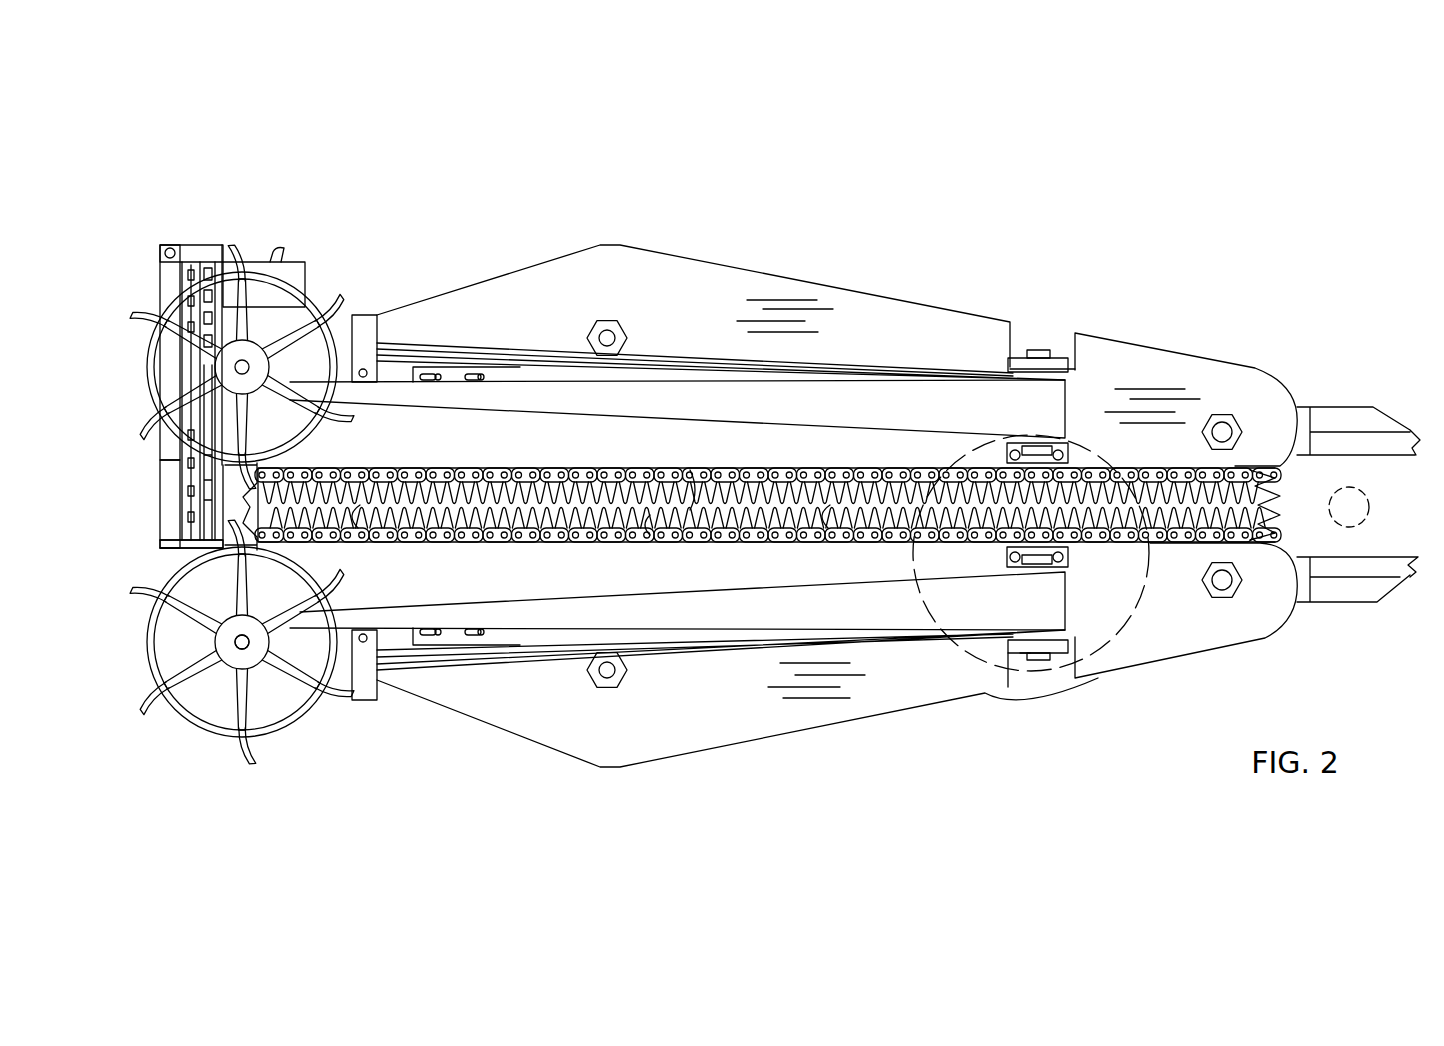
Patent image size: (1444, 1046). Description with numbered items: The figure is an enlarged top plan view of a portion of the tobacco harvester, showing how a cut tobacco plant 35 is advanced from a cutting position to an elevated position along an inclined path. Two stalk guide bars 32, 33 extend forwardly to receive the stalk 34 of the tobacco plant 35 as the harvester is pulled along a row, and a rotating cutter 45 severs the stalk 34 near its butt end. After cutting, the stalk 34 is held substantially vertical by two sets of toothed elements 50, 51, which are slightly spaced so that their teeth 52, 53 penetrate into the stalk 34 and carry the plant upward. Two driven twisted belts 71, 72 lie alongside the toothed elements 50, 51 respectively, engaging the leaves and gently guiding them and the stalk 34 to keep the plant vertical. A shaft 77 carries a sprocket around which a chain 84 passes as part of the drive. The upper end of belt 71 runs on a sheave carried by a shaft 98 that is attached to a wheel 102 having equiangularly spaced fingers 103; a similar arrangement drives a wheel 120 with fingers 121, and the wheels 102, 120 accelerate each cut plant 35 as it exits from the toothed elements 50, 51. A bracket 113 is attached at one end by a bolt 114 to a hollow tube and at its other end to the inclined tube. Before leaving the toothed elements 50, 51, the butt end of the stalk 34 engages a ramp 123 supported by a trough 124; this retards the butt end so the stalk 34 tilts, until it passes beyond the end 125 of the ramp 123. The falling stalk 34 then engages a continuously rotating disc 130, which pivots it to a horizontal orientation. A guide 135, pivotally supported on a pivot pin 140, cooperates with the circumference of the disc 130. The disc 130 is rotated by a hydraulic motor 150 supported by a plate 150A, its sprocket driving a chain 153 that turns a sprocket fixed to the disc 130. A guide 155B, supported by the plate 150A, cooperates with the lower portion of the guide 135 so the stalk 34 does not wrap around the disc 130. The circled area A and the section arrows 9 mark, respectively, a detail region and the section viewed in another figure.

The guide 155B is at (158, 294).
The chain 153 is at (198, 290).
The plate 150A is at (210, 288).
The hydraulic motor 150 is at (297, 261).
The wheel 120 is at (346, 299).
The fingers 121 is at (342, 295).
The end 125 is at (346, 467).
The ramp 123 is at (422, 518).
The twisted belt 72 is at (563, 412).
The teeth 52 is at (687, 466).
The toothed elements 51 is at (750, 467).
The teeth 53 is at (648, 523).
The toothed elements 50 is at (737, 525).
The stalk 34 is at (368, 543).
The tobacco plant 35 is at (1338, 490).
The stalk guide bar 33 is at (1404, 428).
The rotating cutter 45 is at (1256, 458).
The stalk guide bar 32 is at (1377, 603).
The guide 135 is at (158, 483).
The rotating disc 130 is at (186, 508).
The trough 124 is at (232, 512).
The pivot pin 140 is at (176, 585).
The bolt 114 is at (367, 632).
The bracket 113 is at (377, 672).
The twisted belt 71 is at (593, 598).
The fingers 103 is at (375, 700).
The shaft 98 is at (300, 713).
The wheel 102 is at (246, 648).
The shaft 77 is at (1040, 662).
The chain 84 is at (1025, 655).
The detail area A is at (1123, 640).
The section line 9 is at (167, 767).